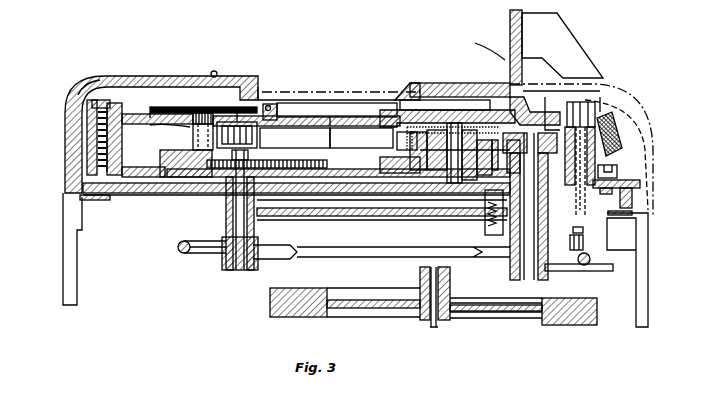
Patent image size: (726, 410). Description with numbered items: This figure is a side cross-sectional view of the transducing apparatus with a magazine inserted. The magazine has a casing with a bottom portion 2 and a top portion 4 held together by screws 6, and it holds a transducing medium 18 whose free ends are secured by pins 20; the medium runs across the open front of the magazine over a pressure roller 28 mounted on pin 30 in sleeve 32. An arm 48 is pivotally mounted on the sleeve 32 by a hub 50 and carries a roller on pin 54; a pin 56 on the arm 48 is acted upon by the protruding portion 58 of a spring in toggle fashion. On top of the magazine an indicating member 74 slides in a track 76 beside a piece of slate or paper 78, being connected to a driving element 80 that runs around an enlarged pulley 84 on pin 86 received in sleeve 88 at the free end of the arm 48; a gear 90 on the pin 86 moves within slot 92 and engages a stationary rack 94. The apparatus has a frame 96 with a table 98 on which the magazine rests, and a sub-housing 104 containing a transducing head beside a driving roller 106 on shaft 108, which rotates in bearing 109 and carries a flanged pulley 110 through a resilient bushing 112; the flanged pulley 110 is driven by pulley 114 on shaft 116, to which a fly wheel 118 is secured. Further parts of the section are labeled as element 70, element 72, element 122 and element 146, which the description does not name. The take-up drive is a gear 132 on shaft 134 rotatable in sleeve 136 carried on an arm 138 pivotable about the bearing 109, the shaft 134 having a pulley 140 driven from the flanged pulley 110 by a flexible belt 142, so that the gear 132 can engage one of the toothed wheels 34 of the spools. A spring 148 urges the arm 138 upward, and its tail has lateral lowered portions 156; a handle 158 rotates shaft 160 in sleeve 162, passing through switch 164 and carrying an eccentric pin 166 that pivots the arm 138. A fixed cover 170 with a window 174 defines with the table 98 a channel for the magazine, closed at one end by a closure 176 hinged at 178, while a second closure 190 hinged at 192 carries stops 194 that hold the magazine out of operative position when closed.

The bottom portion 2 is at (88, 160).
The top portion 4 is at (90, 113).
The screws 6 is at (112, 103).
The transducing medium 18 is at (366, 100).
The pins 20 is at (440, 130).
The pressure roller 28 is at (422, 127).
The pin 30 is at (205, 108).
The sleeve 32 is at (472, 80).
The toothed wheels 34 is at (315, 176).
The arm 48 is at (340, 165).
The hub 50 is at (455, 123).
The pin 54 is at (240, 116).
The pin 56 is at (480, 190).
The protruding portion 58 is at (410, 155).
The bushing 70 is at (505, 140).
The nut 72 is at (530, 206).
The indicating member 74 is at (272, 104).
The track 76 is at (337, 111).
The piece of slate or paper 78 is at (330, 117).
The driving element 80 is at (148, 107).
The enlarged pulley 84 is at (170, 107).
The pin 86 is at (200, 113).
The sleeve 88 is at (196, 136).
The gear 90 is at (168, 104).
The slot 92 is at (222, 122).
The stationary rack 94 is at (190, 130).
The frame 96 is at (48, 271).
The table 98 is at (134, 194).
The sub-housing 104 is at (165, 162).
The driving roller 106 is at (568, 118).
The shaft 108 is at (535, 278).
The bearing 109 is at (604, 140).
The flanged pulley 110 is at (616, 271).
The resilient bushing 112 is at (510, 272).
The pulley 114 is at (440, 262).
The shaft 116 is at (434, 327).
The fly wheel 118 is at (572, 318).
The wedge 122 is at (622, 130).
The gear 132 is at (184, 178).
The shaft 134 is at (238, 272).
The sleeve 136 is at (226, 212).
The arm 138 is at (445, 200).
The pulley 140 is at (212, 248).
The flexible belt 142 is at (338, 252).
The channel 146 is at (310, 208).
The spring 148 is at (505, 212).
The lateral lowered portions 156 is at (585, 238).
The handle 158 is at (580, 98).
The shaft 160 is at (642, 112).
The sleeve 162 is at (617, 156).
The switch 164 is at (625, 190).
The eccentric pin 166 is at (583, 262).
The fixed cover 170 is at (258, 87).
The window 174 is at (400, 100).
The closure 176 is at (84, 82).
The hinge 178 is at (214, 71).
The second closure 190 is at (510, 30).
The hinge 192 is at (476, 46).
The stops 194 is at (565, 30).